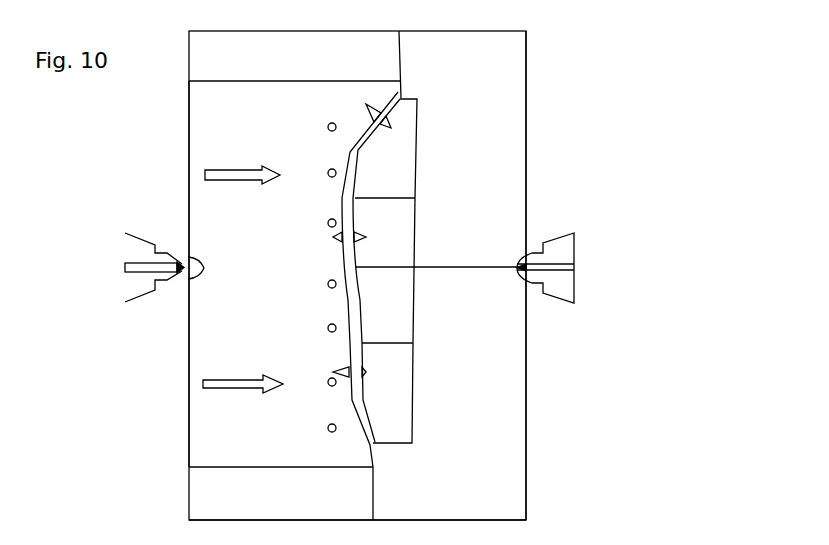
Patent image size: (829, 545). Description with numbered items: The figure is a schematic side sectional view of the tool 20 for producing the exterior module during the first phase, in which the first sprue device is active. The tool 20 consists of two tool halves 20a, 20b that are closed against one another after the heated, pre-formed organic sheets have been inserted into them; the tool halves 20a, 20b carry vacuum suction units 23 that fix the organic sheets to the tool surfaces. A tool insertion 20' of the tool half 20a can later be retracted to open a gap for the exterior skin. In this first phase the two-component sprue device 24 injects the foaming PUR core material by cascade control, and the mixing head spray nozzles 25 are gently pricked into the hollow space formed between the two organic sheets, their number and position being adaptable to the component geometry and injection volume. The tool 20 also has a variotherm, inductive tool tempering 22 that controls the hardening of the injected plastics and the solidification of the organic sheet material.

The tool 20 is at (304, 275).
The tool insertion 20' is at (206, 274).
The tool half 20a is at (205, 500).
The tool half 20b is at (508, 490).
The variotherm inductive tool tempering 22 is at (328, 283).
The vacuum suction units 23 is at (386, 124).
The 2K sprue device 24 is at (413, 223).
The mixing head spray nozzles 25 is at (362, 343).